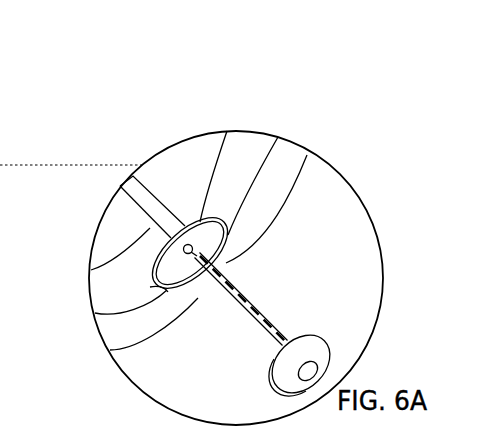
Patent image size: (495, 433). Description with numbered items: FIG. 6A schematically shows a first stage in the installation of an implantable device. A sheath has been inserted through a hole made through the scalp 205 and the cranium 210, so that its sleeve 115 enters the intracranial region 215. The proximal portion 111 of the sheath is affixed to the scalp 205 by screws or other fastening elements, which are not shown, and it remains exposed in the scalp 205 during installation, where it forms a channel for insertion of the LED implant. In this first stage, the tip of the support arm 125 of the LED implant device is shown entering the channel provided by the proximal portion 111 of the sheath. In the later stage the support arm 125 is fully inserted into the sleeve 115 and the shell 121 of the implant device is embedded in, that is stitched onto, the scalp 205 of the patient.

The proximal portion 111 is at (190, 257).
The sleeve 115 is at (145, 192).
The shell 121 is at (332, 348).
The support arm 125 is at (247, 302).
The scalp 205 is at (288, 168).
The cranium 210 is at (250, 158).
The intracranial region 215 is at (115, 222).